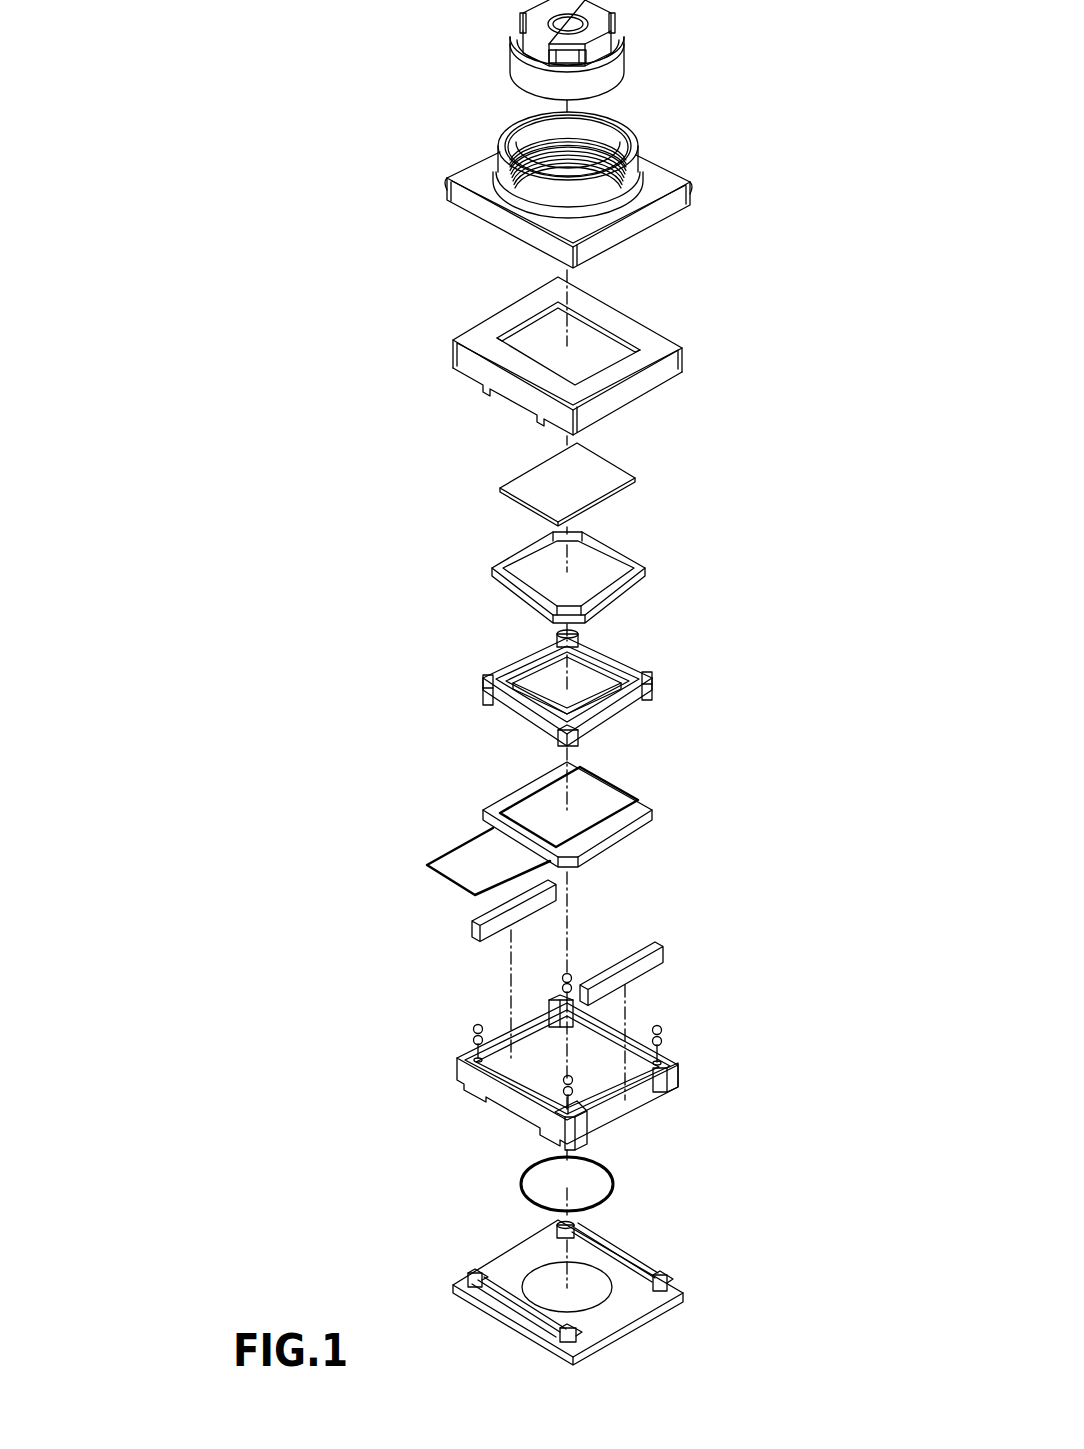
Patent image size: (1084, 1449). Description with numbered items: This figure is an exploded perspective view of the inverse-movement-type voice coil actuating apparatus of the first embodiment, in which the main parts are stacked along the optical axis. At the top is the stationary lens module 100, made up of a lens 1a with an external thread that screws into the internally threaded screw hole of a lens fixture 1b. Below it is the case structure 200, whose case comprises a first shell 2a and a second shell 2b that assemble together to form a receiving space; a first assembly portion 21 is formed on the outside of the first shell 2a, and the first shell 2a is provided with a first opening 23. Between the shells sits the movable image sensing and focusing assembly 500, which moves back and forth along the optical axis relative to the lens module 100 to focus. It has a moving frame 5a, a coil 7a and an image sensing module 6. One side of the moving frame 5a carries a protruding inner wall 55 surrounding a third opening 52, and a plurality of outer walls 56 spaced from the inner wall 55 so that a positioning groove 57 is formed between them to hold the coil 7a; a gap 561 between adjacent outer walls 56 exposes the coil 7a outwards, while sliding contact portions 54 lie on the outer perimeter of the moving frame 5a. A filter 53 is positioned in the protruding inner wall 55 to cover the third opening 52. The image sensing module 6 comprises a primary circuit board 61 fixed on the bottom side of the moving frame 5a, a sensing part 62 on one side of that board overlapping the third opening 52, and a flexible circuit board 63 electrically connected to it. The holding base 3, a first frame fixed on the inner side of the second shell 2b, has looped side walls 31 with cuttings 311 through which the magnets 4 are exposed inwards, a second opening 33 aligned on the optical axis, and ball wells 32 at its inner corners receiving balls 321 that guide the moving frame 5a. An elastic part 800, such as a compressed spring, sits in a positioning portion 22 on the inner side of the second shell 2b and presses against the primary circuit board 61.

The lens module 100 is at (390, 1).
The lens 1a is at (502, 13).
The lens fixture 1b is at (502, 129).
The case structure 200 is at (443, 315).
The first shell 2a is at (571, 340).
The first assembly portion 21 is at (658, 346).
The first opening 23 is at (612, 340).
The filter 53 is at (598, 470).
The image sensing and focusing assembly 500 is at (372, 563).
The coil 7a is at (493, 567).
The moving frame 5a is at (562, 685).
The sliding contact portions 54 is at (653, 693).
The gap 561 is at (612, 653).
The third opening 52 is at (550, 683).
The positioning groove 57 is at (643, 672).
The outer walls 56 is at (650, 678).
The protruding inner wall 55 is at (615, 710).
The image sensing module 6 is at (543, 828).
The primary circuit board 61 is at (645, 820).
The sensing part 62 is at (590, 818).
The flexible circuit board 63 is at (445, 860).
The magnet 4 is at (660, 958).
The holding base 3 is at (556, 1060).
The side walls 31 is at (638, 1020).
The second opening 33 is at (540, 1055).
The cutting 311 is at (505, 1045).
The ball well 32 is at (668, 1055).
The balls 321 is at (665, 1030).
The elastic part 800 is at (523, 1173).
The second shell 2b is at (532, 1276).
The positioning portion 22 is at (597, 1277).